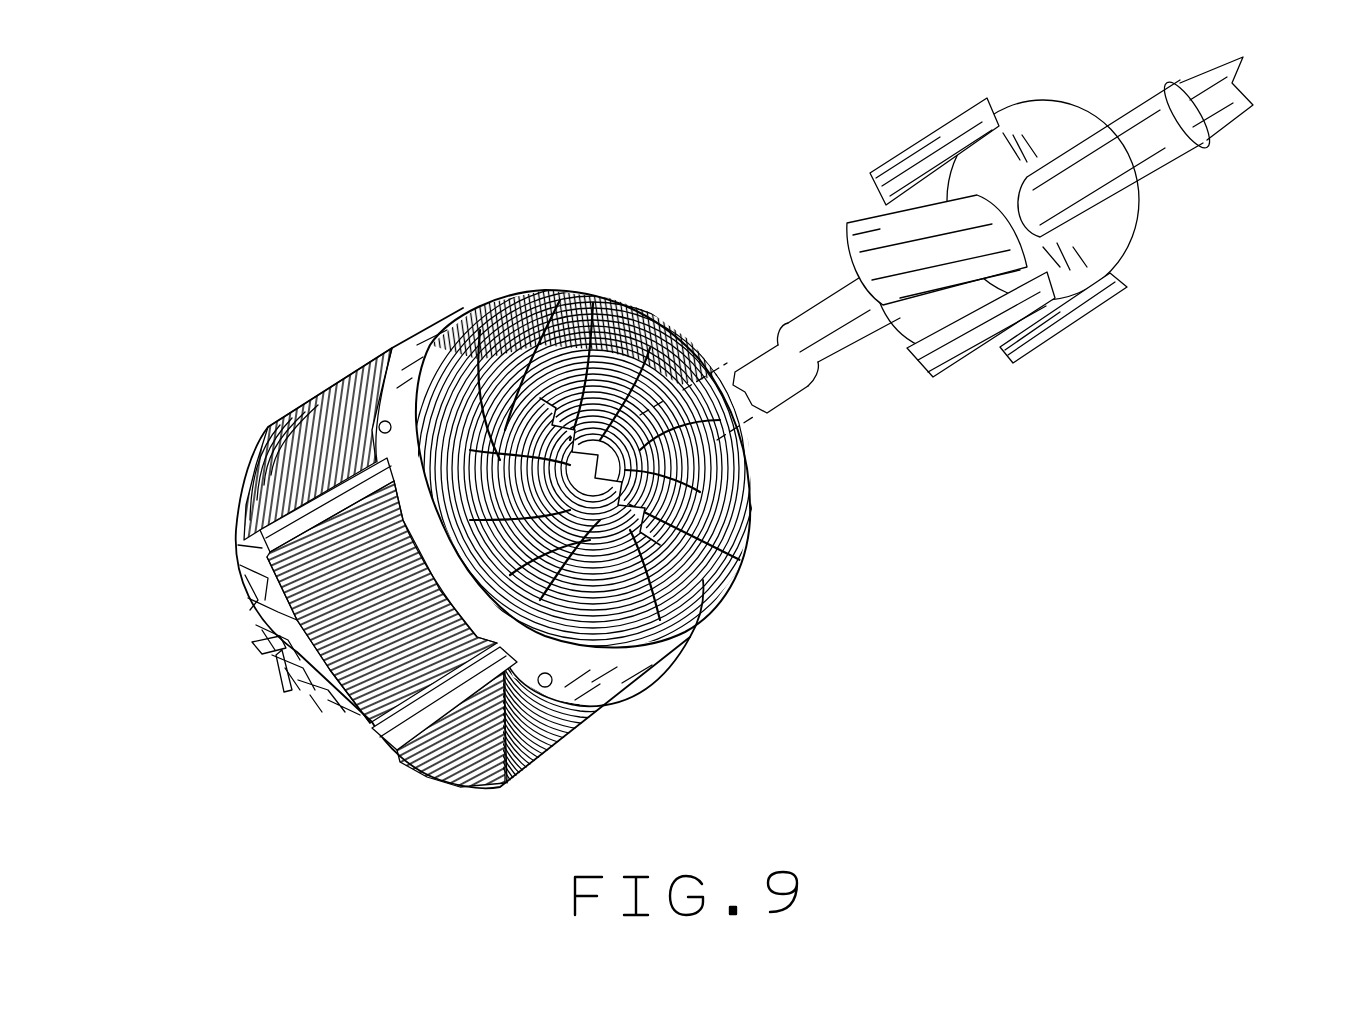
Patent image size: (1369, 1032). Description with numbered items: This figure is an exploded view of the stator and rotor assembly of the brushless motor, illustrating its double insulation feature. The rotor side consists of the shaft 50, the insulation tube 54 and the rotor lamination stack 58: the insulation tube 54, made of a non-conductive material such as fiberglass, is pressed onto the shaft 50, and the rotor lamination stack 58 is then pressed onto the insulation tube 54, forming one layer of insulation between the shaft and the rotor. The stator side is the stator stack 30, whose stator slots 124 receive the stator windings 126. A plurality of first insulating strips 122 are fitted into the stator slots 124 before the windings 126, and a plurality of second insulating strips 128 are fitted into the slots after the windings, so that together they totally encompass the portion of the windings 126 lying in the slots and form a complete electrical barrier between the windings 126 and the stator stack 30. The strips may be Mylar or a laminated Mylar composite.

The stator stack 30 is at (362, 356).
The shaft 50 is at (1243, 118).
The insulation tube 54 is at (1133, 165).
The rotor lamination stack 58 is at (1090, 313).
The first insulating strips 122 is at (637, 680).
The stator slots 124 is at (455, 553).
The stator windings 126 is at (710, 598).
The second insulating strips 128 is at (593, 303).